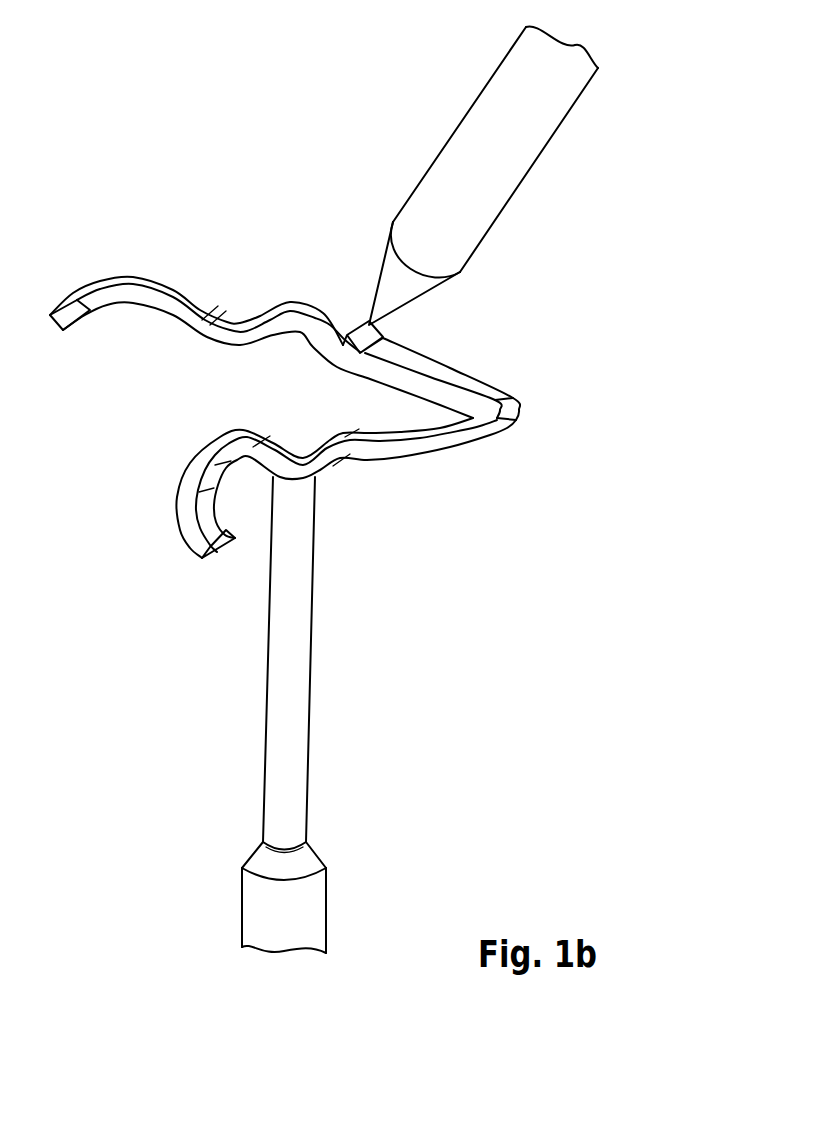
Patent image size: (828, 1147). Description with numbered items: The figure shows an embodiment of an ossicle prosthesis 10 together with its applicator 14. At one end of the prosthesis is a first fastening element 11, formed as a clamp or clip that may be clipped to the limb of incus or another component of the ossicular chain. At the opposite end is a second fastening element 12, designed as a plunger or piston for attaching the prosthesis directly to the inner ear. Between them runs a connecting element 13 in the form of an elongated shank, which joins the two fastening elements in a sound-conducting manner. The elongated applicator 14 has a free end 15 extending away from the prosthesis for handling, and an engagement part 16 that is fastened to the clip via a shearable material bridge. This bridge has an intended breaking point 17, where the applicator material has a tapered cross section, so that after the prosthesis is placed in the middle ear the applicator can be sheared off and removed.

The ossicle prosthesis 10 is at (602, 262).
The first fastening element 11 is at (423, 448).
The second fastening element 12 is at (317, 907).
The connecting element 13 is at (305, 667).
The applicator 14 is at (532, 170).
The free end 15 is at (497, 83).
The engagement part 16 is at (390, 263).
The intended breaking point 17 is at (367, 323).